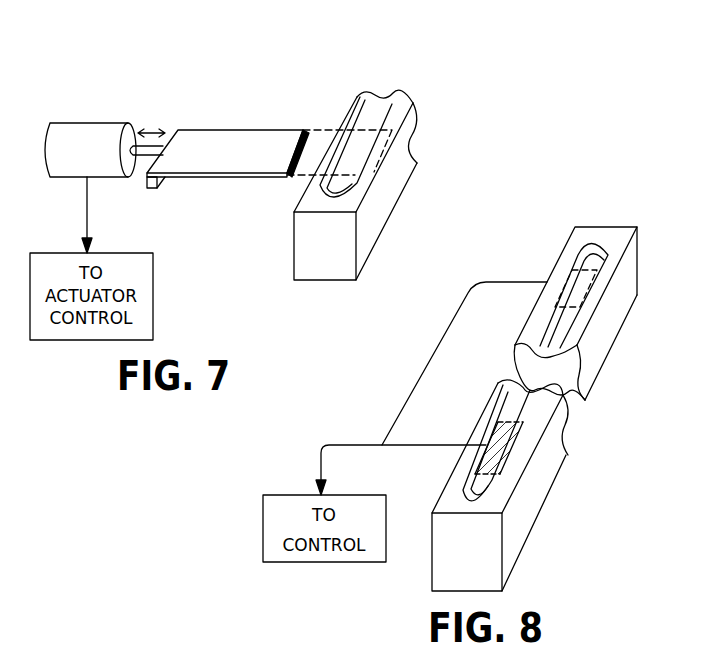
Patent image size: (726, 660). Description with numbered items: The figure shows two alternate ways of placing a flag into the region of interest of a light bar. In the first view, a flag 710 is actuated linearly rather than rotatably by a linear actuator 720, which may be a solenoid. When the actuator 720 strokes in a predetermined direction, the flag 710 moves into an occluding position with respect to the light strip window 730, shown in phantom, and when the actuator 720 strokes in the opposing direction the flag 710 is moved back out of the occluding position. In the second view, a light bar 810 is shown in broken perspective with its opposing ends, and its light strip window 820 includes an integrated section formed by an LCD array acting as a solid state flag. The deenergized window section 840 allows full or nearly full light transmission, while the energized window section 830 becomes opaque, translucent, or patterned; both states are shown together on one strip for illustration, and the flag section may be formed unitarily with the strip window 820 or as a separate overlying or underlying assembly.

In FIG. 7, the flag 710 is at (226, 130).
In FIG. 7, the linear actuator 720 is at (101, 123).
In FIG. 7, the light strip window 730 is at (358, 143).
In FIG. 8, the light bar 810 is at (600, 405).
In FIG. 8, the light strip window 820 is at (560, 326).
In FIG. 8, the energized LCD window section 830 is at (513, 445).
In FIG. 8, the deenergized LCD window section 840 is at (583, 287).